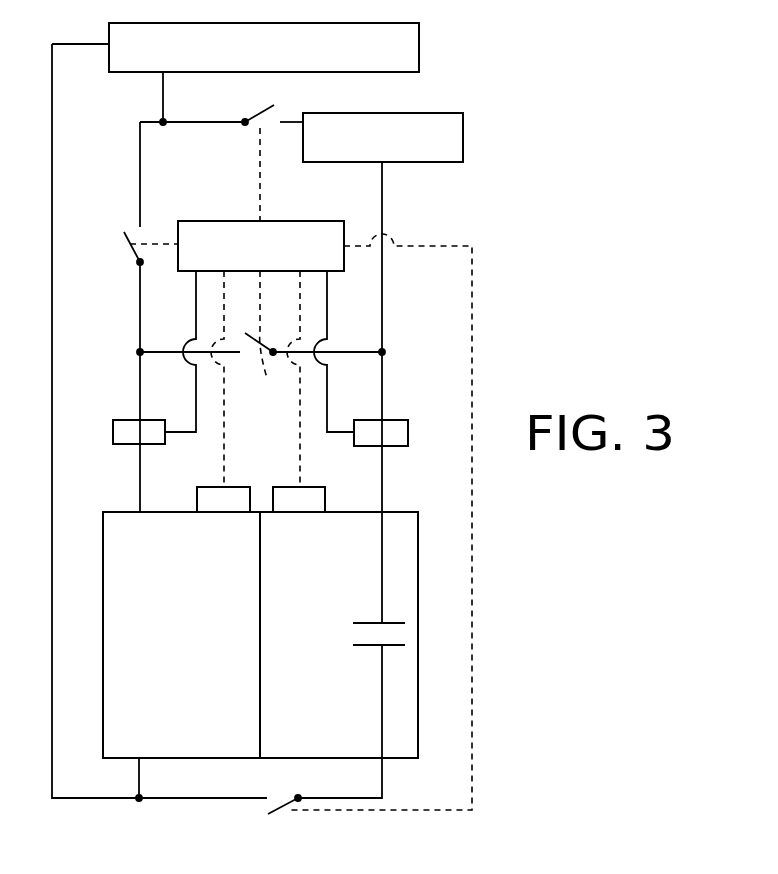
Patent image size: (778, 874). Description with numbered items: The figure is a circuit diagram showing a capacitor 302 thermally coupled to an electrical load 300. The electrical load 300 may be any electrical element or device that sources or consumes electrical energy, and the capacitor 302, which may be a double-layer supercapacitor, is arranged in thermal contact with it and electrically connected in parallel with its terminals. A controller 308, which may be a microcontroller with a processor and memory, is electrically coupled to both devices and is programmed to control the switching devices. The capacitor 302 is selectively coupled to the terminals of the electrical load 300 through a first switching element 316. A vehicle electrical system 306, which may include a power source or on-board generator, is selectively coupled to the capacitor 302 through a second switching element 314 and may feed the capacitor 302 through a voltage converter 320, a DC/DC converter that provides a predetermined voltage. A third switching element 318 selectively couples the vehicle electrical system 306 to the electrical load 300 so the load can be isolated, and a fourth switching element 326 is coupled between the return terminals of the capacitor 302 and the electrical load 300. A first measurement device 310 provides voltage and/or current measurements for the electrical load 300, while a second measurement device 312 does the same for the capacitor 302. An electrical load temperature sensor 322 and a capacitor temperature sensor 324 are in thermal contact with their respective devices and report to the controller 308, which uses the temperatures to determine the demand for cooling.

The electrical load 300 is at (123, 511).
The capacitor 302 is at (398, 513).
The vehicle electrical system 306 is at (420, 50).
The controller 308 is at (232, 221).
The first measurement device 310 is at (118, 420).
The second measurement device 312 is at (408, 433).
The second switching element 314 is at (270, 106).
The first switching element 316 is at (259, 366).
The third switching element 318 is at (125, 236).
The voltage converter 320 is at (464, 137).
The electrical load temperature sensor 322 is at (218, 487).
The capacitor temperature sensor 324 is at (315, 487).
The fourth switching element 326 is at (288, 804).